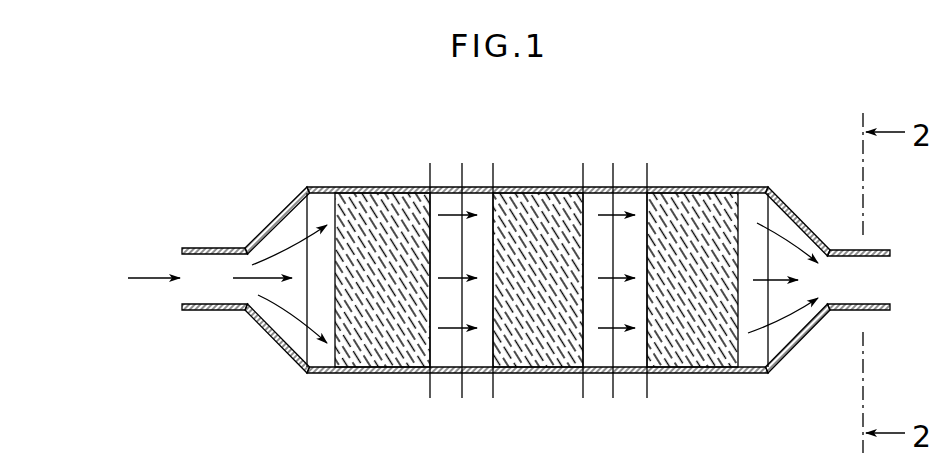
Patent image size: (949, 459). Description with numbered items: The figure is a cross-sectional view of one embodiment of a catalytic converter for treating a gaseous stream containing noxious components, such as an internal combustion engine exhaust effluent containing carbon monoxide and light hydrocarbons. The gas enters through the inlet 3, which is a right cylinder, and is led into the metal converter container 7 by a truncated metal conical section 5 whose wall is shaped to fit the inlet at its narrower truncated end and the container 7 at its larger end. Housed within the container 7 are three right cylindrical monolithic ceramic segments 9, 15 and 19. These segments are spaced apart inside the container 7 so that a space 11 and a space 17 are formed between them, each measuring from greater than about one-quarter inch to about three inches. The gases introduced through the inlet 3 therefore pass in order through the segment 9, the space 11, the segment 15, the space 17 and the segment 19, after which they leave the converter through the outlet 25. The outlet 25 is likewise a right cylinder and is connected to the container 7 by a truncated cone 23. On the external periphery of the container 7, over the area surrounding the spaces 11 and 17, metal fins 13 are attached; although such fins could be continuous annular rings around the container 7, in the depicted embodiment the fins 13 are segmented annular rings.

The inlet 3 is at (222, 247).
The truncated metal conical section 5 is at (278, 214).
The metal converter container 7 is at (318, 187).
The monolithic ceramic segment 9 is at (392, 207).
The space 11 is at (445, 348).
The metal fins 13 is at (462, 177).
The monolithic ceramic segment 15 is at (540, 212).
The space 17 is at (637, 352).
The monolithic ceramic segment 19 is at (700, 207).
The truncated cone 23 is at (798, 340).
The outlet 25 is at (876, 250).